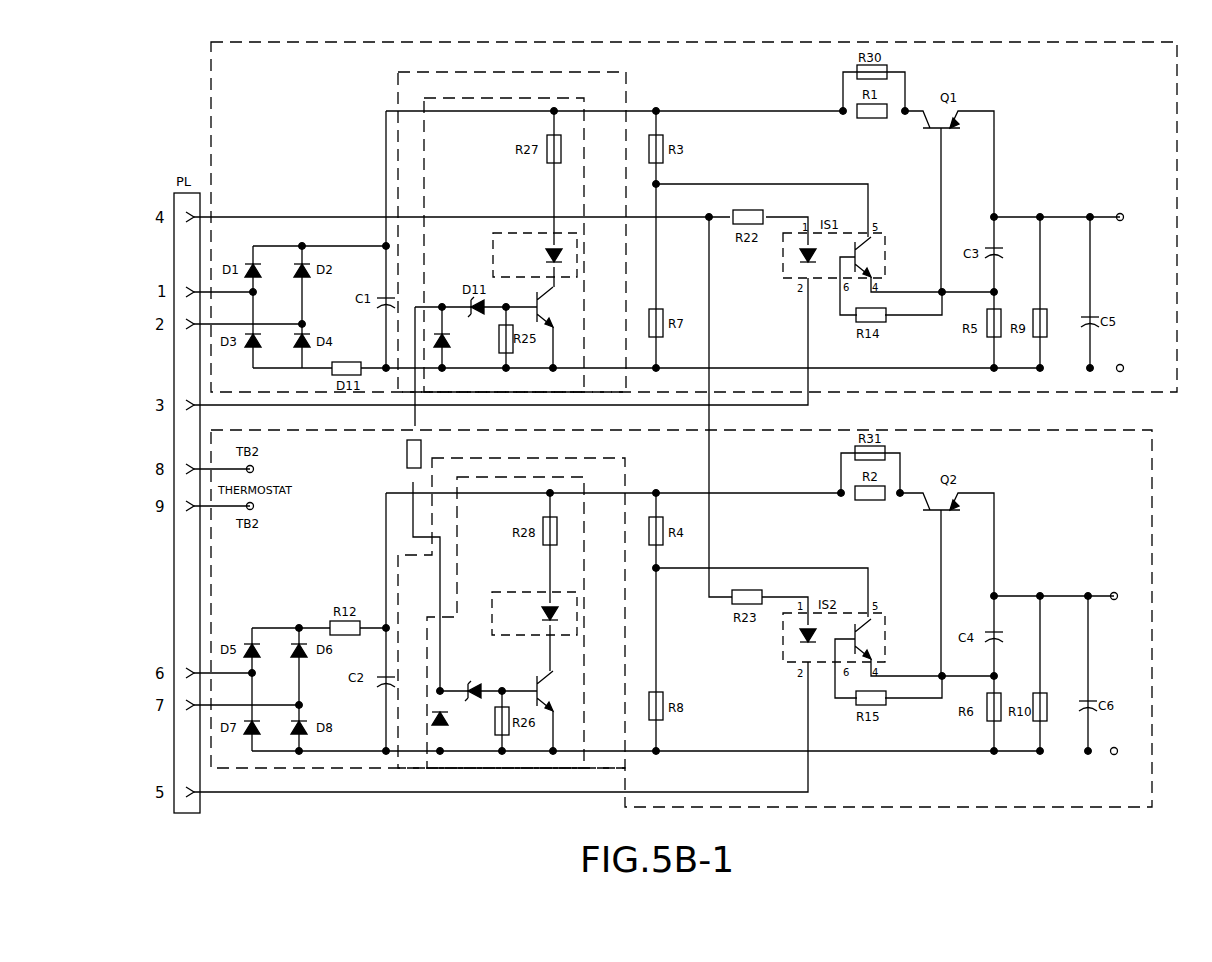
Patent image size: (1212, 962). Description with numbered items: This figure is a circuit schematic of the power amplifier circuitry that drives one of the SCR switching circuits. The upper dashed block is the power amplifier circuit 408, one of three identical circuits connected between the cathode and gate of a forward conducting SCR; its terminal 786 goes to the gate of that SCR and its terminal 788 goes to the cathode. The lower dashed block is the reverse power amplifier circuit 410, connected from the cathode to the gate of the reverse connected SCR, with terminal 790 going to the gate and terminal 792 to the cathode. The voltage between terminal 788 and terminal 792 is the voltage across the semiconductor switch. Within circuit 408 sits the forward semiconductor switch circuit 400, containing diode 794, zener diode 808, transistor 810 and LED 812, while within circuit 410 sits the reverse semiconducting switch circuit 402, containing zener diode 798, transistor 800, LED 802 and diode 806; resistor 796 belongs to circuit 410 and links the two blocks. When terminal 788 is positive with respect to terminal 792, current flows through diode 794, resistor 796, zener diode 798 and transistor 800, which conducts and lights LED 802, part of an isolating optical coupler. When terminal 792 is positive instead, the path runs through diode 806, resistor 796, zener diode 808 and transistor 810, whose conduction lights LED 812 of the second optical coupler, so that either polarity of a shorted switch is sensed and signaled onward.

The forward semiconductor switch circuit 400 is at (413, 112).
The reverse semiconducting switch circuit 402 is at (511, 613).
The power amplifier circuit 408 is at (694, 217).
The reverse power amplifier circuit 410 is at (1152, 533).
The terminal 786 is at (1121, 213).
The terminal 788 is at (1122, 364).
The terminal 790 is at (1113, 592).
The terminal 792 is at (1114, 747).
The diode 794 is at (446, 352).
The resistor 796 is at (402, 499).
The zener diode 798 is at (468, 686).
The transistor 800 is at (531, 686).
The LED 802 is at (548, 606).
The diode 806 is at (448, 718).
The zener diode 808 is at (504, 245).
The transistor 810 is at (553, 322).
The LED 812 is at (549, 248).